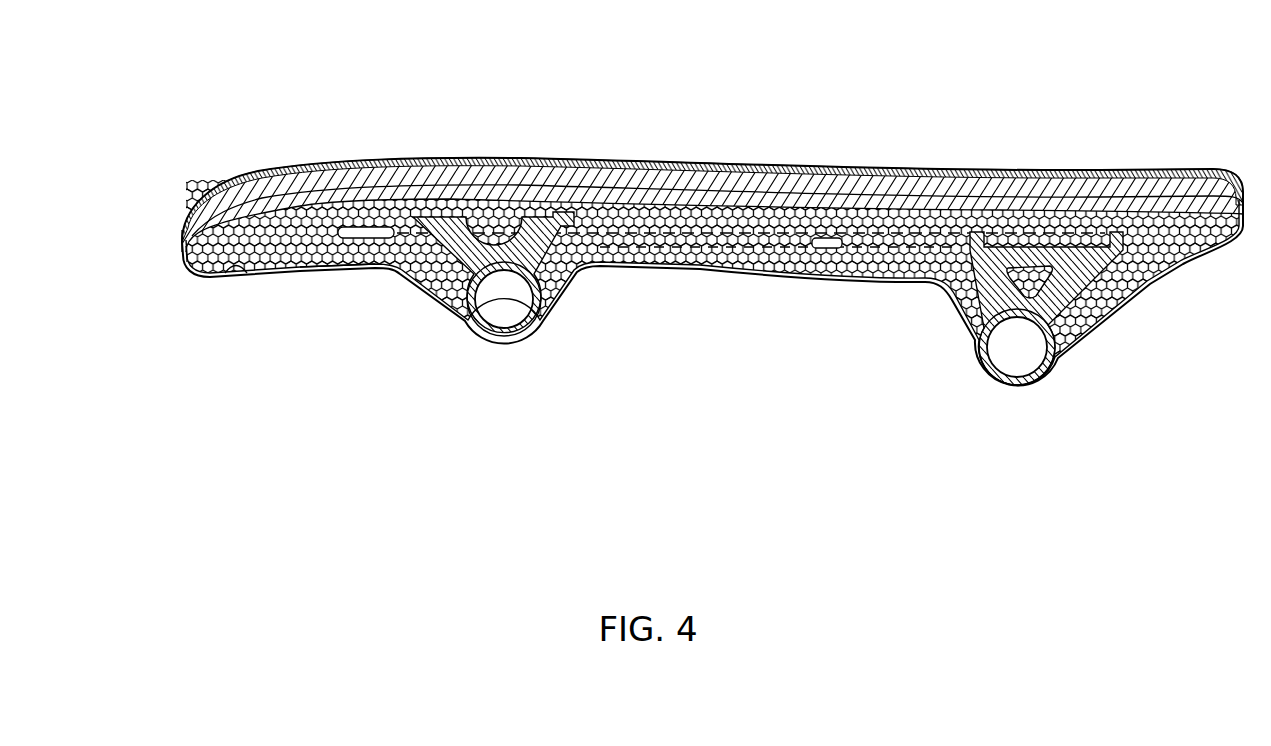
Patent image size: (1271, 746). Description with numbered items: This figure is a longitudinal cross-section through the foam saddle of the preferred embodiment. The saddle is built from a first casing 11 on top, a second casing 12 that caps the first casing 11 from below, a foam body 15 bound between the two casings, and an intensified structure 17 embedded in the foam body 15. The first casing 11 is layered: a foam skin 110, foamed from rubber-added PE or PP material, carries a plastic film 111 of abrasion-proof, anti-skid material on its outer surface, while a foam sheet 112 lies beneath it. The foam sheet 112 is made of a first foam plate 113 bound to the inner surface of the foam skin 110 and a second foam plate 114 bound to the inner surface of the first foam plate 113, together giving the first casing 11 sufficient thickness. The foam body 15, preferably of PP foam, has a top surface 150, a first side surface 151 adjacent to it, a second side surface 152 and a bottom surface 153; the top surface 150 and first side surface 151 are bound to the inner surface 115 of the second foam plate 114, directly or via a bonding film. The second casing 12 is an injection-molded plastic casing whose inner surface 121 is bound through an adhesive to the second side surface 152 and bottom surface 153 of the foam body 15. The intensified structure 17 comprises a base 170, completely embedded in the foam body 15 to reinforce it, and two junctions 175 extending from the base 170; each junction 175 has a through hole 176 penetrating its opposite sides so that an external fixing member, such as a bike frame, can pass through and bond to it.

The first casing 11 is at (693, 158).
The foam skin 110 is at (311, 168).
The plastic film 111 is at (255, 172).
The foam sheet 112 is at (717, 130).
The first foam plate 113 is at (390, 173).
The second foam plate 114 is at (380, 88).
The inner surface 115 is at (513, 207).
The second casing 12 is at (282, 276).
The inner surface 121 is at (232, 268).
The foam body 15 is at (787, 265).
The top surface 150 is at (226, 221).
The first side surface 151 is at (182, 228).
The second side surface 152 is at (187, 253).
The bottom surface 153 is at (330, 270).
The intensified structure 17 is at (766, 336).
The base 170 is at (693, 237).
The junction 175 is at (509, 334).
The through hole 176 is at (674, 352).